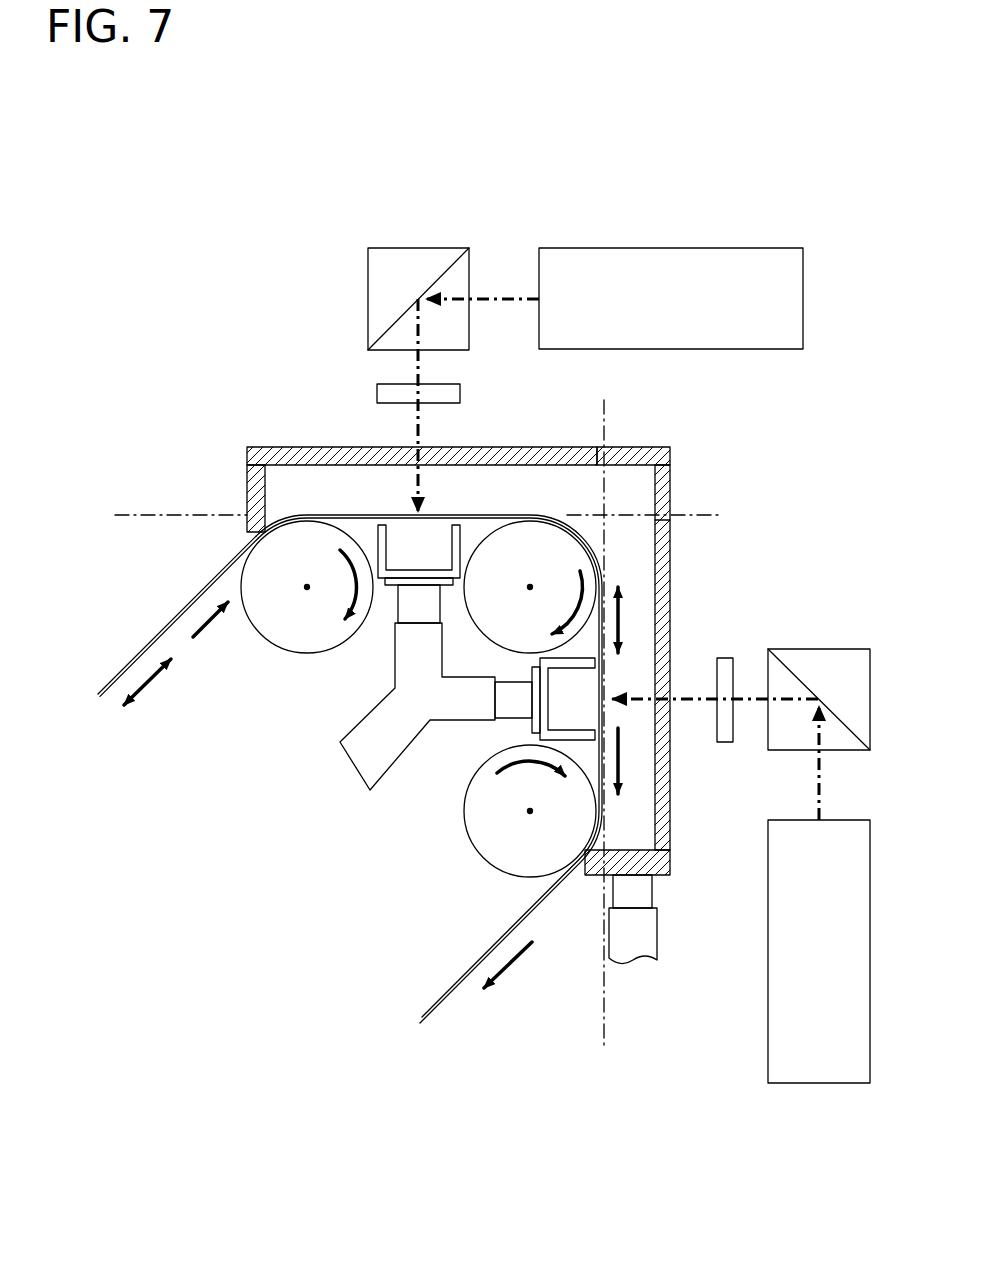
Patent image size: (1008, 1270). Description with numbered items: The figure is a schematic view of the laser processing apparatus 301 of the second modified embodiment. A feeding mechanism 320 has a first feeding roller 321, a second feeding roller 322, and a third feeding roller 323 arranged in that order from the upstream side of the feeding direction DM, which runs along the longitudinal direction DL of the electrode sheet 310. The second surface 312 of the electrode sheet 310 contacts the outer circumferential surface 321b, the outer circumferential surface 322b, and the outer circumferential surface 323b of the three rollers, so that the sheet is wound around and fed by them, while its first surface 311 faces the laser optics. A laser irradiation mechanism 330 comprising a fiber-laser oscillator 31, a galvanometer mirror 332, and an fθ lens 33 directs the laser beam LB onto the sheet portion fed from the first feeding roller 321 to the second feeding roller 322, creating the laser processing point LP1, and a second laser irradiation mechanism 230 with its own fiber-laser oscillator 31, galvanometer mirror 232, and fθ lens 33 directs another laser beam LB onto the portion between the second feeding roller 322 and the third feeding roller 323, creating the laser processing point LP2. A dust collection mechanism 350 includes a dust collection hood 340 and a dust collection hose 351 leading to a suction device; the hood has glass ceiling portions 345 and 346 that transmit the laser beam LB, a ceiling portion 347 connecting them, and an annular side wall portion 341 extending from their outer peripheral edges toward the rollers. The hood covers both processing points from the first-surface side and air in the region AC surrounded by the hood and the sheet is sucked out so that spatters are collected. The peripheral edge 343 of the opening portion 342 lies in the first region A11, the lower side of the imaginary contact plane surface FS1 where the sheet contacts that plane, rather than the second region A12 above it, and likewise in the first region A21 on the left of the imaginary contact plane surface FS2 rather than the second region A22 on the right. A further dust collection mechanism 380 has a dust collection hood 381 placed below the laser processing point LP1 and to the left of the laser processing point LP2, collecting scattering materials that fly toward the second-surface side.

The laser processing apparatus 301 is at (232, 272).
The laser irradiation mechanism 330 is at (588, 226).
The galvanometer mirror 332 is at (368, 282).
The fiber-laser oscillator 31 is at (682, 313).
The fθ lens 33 is at (377, 392).
The laser beam LB is at (500, 295).
The dust collection hood 340 is at (675, 488).
The ceiling portion 345 is at (480, 447).
The ceiling portion 347 is at (640, 447).
The annular side wall portion 341 is at (240, 478).
The ceiling portion 346 is at (672, 553).
The dust collection mechanism 350 is at (677, 540).
The region AC is at (622, 493).
The imaginary contact plane surface FS1 is at (124, 512).
The imaginary contact plane surface FS2 is at (604, 1052).
The first region A11 is at (187, 567).
The second region A12 is at (188, 477).
The first region A21 is at (570, 1034).
The second region A22 is at (679, 1036).
The feeding mechanism 320 is at (284, 657).
The first feeding roller 321 is at (320, 632).
The second feeding roller 322 is at (551, 566).
The third feeding roller 323 is at (551, 856).
The outer circumferential surface 321b is at (302, 655).
The outer circumferential surface 322b is at (548, 503).
The outer circumferential surface 323b is at (470, 833).
The peripheral edge 343 is at (272, 532).
The opening portion 342 is at (359, 489).
The electrode sheet 310 is at (134, 660).
The first surface 311 is at (168, 621).
The second surface 312 is at (178, 642).
The dust collection mechanism 380 is at (393, 788).
The dust collection hood 381 is at (405, 584).
The laser processing point LP1 is at (448, 525).
The laser processing point LP2 is at (540, 700).
The feeding direction DM is at (688, 784).
The longitudinal direction DL is at (419, 648).
The laser irradiation mechanism 230 is at (766, 902).
The galvanometer mirror 232 is at (821, 650).
The dust collection hose 351 is at (648, 925).